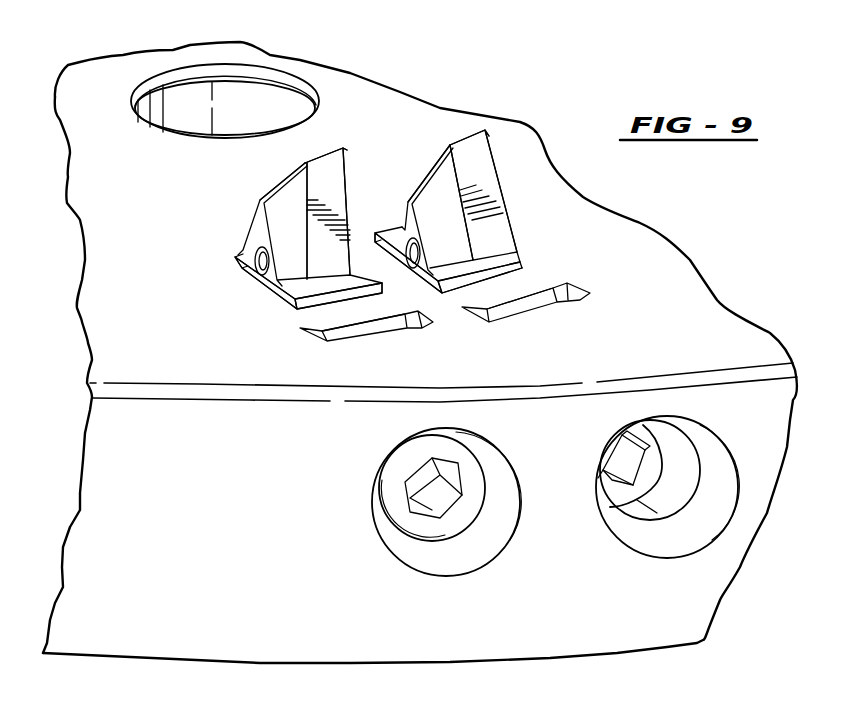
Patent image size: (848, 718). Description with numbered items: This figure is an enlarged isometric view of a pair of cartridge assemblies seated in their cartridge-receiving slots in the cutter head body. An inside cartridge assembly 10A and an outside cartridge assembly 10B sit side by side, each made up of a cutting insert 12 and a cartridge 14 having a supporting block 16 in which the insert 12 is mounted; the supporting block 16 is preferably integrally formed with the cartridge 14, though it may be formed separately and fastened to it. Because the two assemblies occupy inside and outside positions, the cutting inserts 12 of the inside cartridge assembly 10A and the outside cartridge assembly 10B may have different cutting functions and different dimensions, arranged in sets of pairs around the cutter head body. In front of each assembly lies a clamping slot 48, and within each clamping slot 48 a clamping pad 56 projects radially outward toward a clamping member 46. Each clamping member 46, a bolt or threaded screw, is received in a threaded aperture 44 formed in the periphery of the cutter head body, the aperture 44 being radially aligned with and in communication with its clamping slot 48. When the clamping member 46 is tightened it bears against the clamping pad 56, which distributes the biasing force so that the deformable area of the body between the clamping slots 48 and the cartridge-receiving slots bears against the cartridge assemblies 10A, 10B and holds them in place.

The inside cartridge assembly 10A is at (470, 115).
The outside cartridge assembly 10B is at (346, 136).
The cutting insert 12 is at (352, 172).
The cartridge 14 is at (260, 302).
The supporting block 16 is at (288, 194).
The threaded aperture 44 is at (432, 550).
The clamping member 46 is at (398, 497).
The clamping slot 48 is at (306, 332).
The clamping pad 56 is at (347, 320).